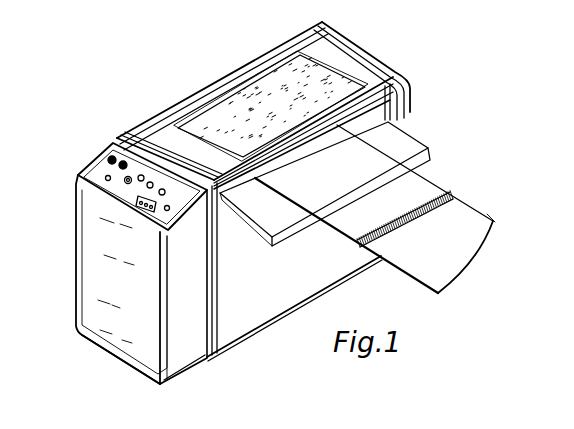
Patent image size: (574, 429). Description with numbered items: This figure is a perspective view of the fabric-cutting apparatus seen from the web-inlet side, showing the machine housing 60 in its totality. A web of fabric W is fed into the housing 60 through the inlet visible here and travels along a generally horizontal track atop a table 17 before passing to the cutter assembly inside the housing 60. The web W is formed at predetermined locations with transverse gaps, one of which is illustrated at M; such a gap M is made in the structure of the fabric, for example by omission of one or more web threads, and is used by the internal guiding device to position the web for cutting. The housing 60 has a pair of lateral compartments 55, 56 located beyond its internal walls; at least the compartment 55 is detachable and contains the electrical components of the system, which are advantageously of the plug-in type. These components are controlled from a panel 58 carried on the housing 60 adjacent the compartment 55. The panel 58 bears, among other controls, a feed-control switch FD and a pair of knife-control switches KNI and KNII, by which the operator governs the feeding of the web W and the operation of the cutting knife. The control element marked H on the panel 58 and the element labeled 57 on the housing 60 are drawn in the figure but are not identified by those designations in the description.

The machine housing 60 is at (255, 342).
The panel 58 is at (135, 191).
The lateral compartment 55 is at (187, 357).
The lid with viewing window 57 is at (246, 92).
The lateral compartment 56 is at (400, 98).
The table 17 is at (413, 142).
The web of fabric W is at (487, 226).
The transverse gap M is at (450, 195).
The main switch H is at (126, 178).
The knife-control switch KNI is at (150, 182).
The knife-control switch KNII is at (142, 176).
The feed-control switch FD is at (162, 190).